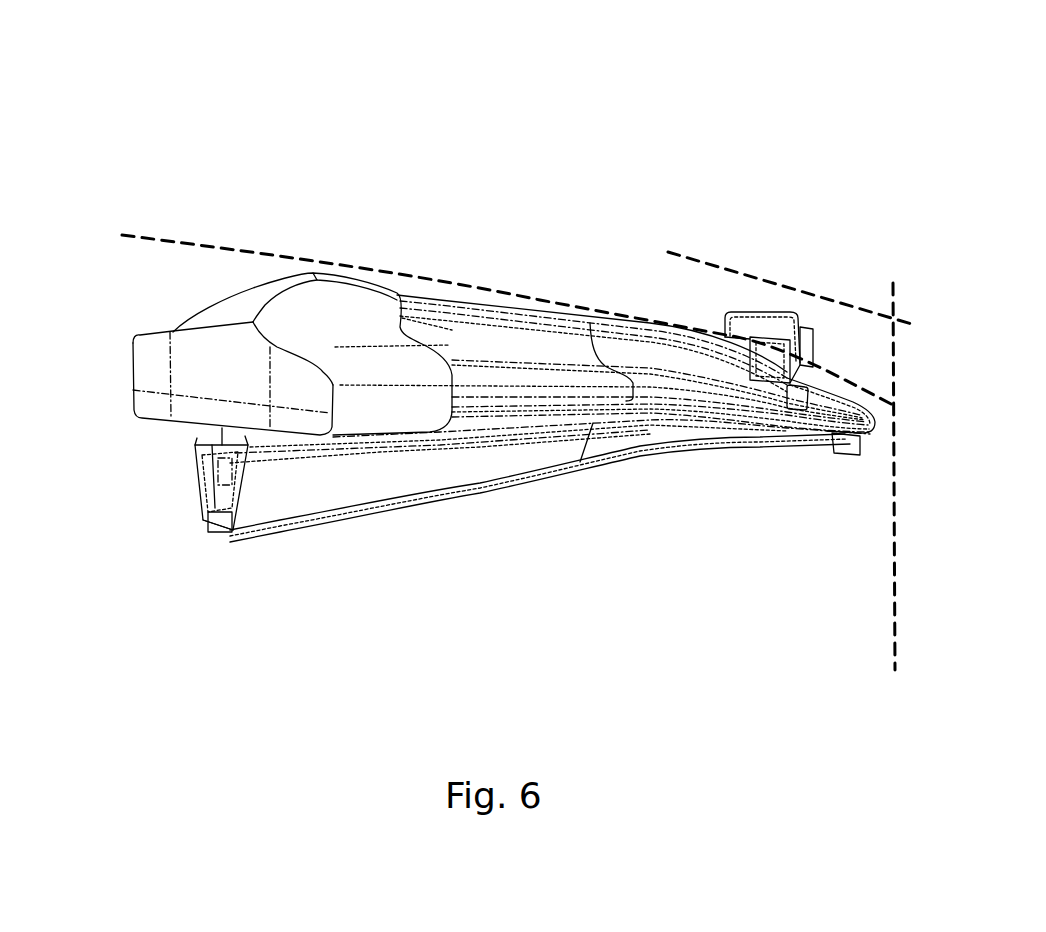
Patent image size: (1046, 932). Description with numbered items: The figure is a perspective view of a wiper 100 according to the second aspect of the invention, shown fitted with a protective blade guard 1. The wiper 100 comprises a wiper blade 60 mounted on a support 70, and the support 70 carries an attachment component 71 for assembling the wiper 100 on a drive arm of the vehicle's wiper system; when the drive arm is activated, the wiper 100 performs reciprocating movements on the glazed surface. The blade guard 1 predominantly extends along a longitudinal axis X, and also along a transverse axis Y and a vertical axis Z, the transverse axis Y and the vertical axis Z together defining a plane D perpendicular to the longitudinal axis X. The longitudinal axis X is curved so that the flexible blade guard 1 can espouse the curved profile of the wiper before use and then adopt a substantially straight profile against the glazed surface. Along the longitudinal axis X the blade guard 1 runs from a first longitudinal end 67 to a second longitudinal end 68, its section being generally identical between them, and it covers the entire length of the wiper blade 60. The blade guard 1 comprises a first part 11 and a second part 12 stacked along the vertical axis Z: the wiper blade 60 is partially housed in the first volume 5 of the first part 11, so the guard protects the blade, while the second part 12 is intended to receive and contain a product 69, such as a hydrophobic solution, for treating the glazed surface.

The wiper 100 is at (484, 202).
The blade guard 1 is at (479, 500).
The first part 11 is at (374, 490).
The first volume 5 is at (236, 500).
The second part 12 is at (213, 545).
The wiper blade 60 is at (223, 468).
The first longitudinal end 67 is at (182, 483).
The second longitudinal end 68 is at (870, 462).
The product 69 is at (210, 529).
The support 70 is at (533, 343).
The attachment component 71 is at (765, 328).
The longitudinal axis X is at (210, 246).
The transverse axis Y is at (687, 255).
The vertical axis Z is at (895, 613).
The plane D is at (892, 353).